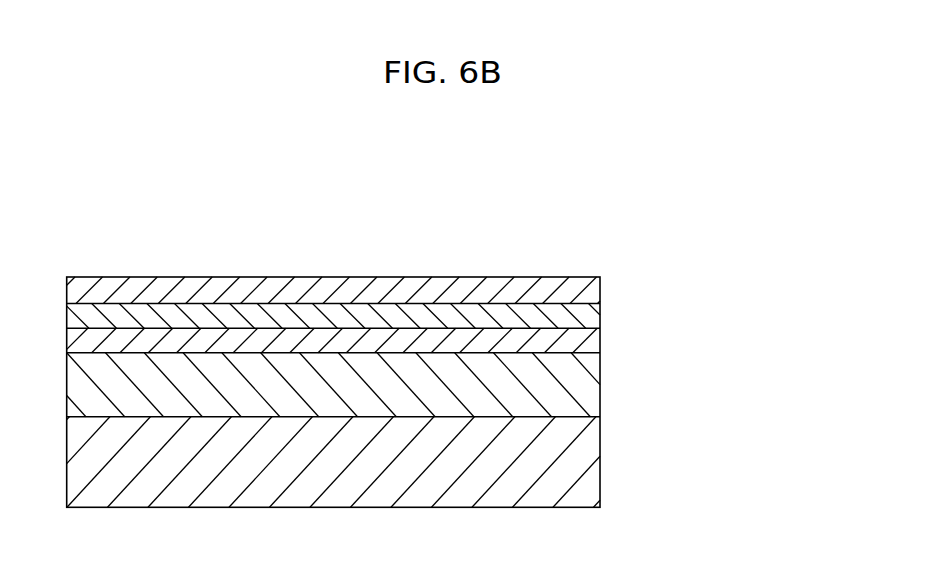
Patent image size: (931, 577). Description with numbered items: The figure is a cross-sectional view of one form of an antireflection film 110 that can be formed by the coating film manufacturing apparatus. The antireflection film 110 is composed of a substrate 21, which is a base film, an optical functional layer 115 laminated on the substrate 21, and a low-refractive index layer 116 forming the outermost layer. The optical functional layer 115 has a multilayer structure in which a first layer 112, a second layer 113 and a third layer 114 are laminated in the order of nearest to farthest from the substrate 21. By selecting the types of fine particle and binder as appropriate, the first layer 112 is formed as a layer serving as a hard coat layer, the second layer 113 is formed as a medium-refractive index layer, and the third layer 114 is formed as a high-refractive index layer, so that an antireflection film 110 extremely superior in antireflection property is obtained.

The antireflection film 110 is at (487, 232).
The low-refractive index layer 116 is at (600, 286).
The third layer 114 is at (600, 315).
The second layer 113 is at (600, 337).
The first layer 112 is at (600, 390).
The optical functional layer 115 is at (733, 305).
The substrate 21 is at (593, 468).